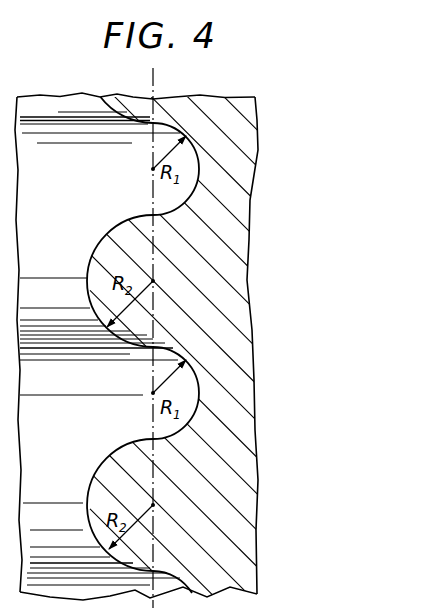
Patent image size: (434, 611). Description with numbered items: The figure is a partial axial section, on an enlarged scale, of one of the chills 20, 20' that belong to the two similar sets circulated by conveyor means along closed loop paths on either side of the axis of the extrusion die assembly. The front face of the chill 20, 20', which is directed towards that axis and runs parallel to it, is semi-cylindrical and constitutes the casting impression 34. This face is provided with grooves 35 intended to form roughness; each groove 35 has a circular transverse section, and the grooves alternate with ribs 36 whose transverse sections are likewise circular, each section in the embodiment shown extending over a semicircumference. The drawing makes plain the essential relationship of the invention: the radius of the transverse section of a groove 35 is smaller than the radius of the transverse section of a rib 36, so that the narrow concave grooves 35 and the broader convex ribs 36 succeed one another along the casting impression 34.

The chill 20 is at (159, 305).
The chill 20' is at (290, 345).
The casting impression 34 is at (181, 198).
The groove 35 is at (200, 161).
The rib 36 is at (95, 258).